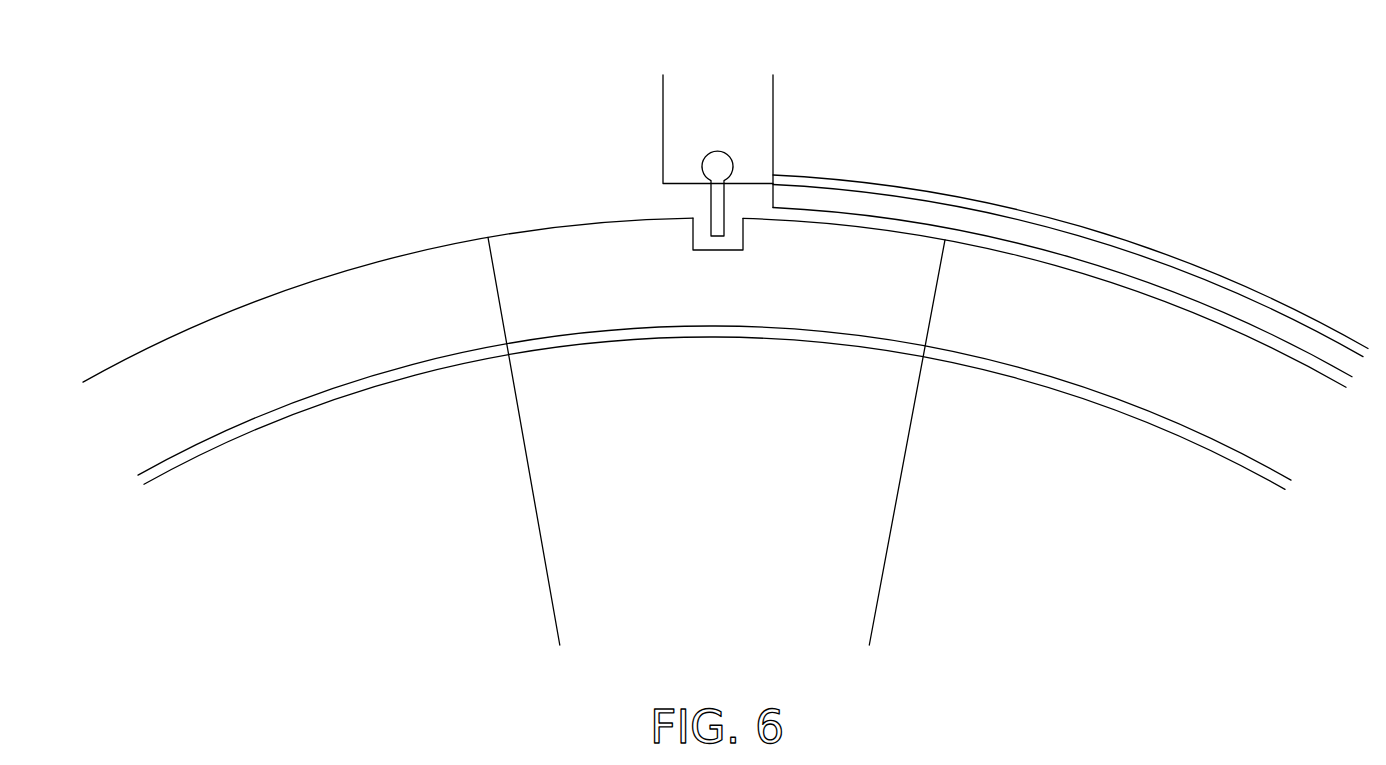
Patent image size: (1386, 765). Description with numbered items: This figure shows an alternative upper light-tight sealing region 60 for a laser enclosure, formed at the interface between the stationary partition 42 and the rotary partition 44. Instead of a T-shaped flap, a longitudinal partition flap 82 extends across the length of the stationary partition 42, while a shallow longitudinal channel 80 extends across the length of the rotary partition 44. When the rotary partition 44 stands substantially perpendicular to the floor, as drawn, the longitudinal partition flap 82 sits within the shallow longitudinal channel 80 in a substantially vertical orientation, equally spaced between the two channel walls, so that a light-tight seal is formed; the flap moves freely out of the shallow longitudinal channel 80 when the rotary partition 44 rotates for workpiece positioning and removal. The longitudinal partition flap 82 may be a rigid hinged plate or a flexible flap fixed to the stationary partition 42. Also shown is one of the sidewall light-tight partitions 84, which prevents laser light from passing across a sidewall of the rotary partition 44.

The light-tight sealing region 60 is at (452, 76).
The stationary partition 42 is at (765, 104).
The rotary partition 44 is at (888, 520).
The shallow longitudinal channel 80 is at (733, 238).
The longitudinal partition flap 82 is at (710, 195).
The sidewall light-tight partition 84 is at (990, 225).